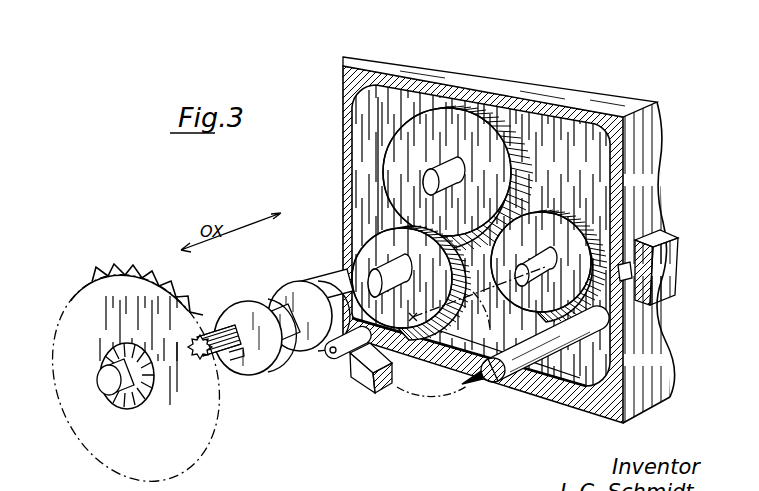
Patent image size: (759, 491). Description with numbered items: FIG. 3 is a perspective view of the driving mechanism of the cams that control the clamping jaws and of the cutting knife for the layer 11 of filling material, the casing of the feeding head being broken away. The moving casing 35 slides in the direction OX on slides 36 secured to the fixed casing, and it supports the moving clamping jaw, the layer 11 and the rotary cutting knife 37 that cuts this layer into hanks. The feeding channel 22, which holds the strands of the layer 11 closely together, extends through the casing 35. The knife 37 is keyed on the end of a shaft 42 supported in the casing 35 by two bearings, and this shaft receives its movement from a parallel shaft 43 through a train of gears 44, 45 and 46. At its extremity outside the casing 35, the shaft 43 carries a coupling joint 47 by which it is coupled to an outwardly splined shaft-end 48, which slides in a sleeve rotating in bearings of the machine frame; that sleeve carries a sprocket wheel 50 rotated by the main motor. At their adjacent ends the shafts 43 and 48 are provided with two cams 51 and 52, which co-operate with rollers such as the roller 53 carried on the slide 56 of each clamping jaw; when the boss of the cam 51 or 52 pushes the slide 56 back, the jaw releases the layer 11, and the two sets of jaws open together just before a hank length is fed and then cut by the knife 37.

The casing 35 is at (516, 95).
The slides 36 is at (670, 240).
The gear 45 is at (484, 152).
The gear 44 is at (384, 242).
The gear 46 is at (564, 240).
The shaft 42 is at (530, 282).
The shaft 43 is at (331, 298).
The feeding channel 22 is at (533, 367).
The layer 11 is at (465, 381).
The rotary cutting knife 37 is at (413, 387).
The slide 56 is at (375, 380).
The roller 53 is at (328, 358).
The sprocket wheel 50 is at (153, 294).
The cam 52 is at (228, 318).
The coupling joint 47 is at (268, 306).
The splined shaft-end 48 is at (238, 357).
The cam 51 is at (283, 290).